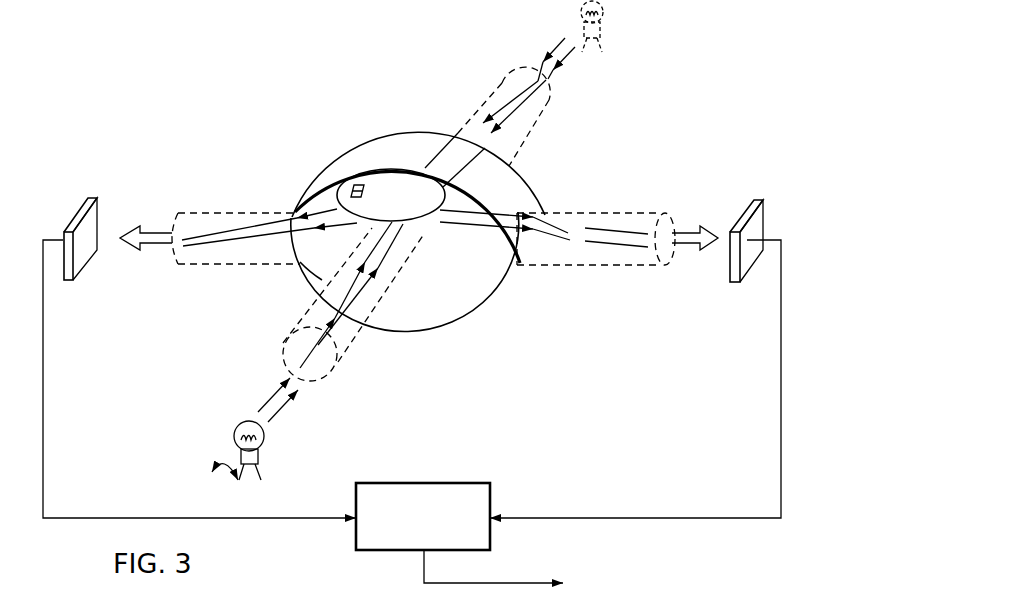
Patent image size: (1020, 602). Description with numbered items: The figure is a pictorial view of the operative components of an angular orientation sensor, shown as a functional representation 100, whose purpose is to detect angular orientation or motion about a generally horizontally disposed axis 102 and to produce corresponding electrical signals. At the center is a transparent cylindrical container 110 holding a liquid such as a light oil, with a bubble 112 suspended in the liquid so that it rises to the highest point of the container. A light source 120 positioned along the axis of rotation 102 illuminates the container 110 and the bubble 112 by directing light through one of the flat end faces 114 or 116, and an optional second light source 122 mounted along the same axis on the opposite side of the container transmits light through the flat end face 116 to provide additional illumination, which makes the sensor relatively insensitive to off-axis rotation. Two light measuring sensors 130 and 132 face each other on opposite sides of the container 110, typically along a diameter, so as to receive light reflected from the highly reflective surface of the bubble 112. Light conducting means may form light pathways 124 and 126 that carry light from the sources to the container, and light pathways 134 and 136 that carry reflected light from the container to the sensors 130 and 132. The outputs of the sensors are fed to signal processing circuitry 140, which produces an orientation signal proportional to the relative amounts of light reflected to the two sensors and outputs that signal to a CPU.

The functional representation of sensor components 100 is at (290, 543).
The axis of rotation 102 is at (218, 478).
The transparent cylindrical container 110 is at (455, 332).
The bubble 112 is at (340, 191).
The flat end face 114 is at (313, 270).
The flat end face 116 is at (373, 140).
The light source 120 is at (260, 452).
The second light source 122 is at (600, 22).
The light pathway 124 is at (328, 383).
The light pathway 126 is at (500, 80).
The light measuring sensor 130 is at (80, 252).
The light measuring sensor 132 is at (743, 265).
The light pathway 134 is at (210, 265).
The light pathway 136 is at (590, 266).
The signal processing circuitry 140 is at (483, 487).